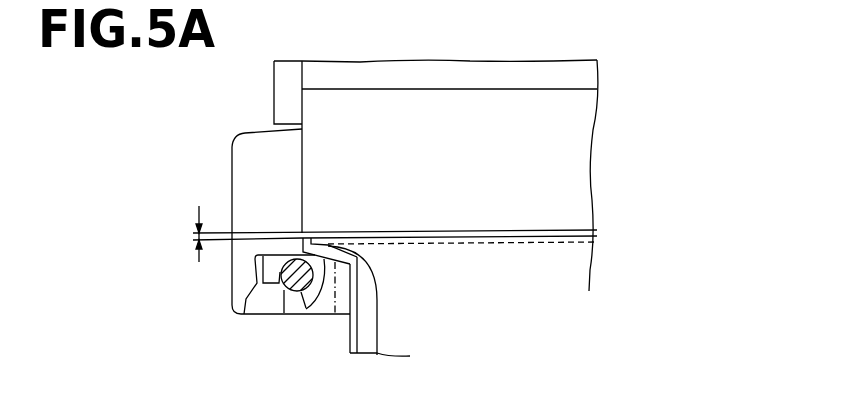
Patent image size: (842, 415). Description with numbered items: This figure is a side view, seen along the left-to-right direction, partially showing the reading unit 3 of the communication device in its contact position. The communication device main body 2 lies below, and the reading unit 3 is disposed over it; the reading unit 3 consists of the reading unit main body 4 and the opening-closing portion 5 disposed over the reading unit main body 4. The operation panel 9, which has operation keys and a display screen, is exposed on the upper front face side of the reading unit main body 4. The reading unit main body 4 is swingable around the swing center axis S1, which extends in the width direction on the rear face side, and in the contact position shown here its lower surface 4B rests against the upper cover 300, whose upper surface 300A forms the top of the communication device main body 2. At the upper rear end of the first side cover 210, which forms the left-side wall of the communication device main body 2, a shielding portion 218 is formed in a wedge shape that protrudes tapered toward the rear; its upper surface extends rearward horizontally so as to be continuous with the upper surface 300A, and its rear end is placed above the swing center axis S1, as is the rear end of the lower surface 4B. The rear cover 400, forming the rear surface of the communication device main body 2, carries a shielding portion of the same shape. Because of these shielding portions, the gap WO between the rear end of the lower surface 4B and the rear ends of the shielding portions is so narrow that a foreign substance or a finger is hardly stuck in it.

The communication device main body 2 is at (590, 290).
The reading unit 3 is at (671, 68).
The reading unit main body 4 is at (598, 130).
The opening-closing portion 5 is at (598, 73).
The lower surface 4B is at (554, 244).
The upper cover 300 is at (592, 241).
The upper surface 300A is at (487, 232).
The first side cover 210 is at (463, 292).
The shielding portion 218 is at (377, 355).
The rear cover 400 is at (346, 333).
The operation panel 9 is at (287, 292).
The swing center axis S1 is at (273, 297).
The gap WO is at (182, 234).